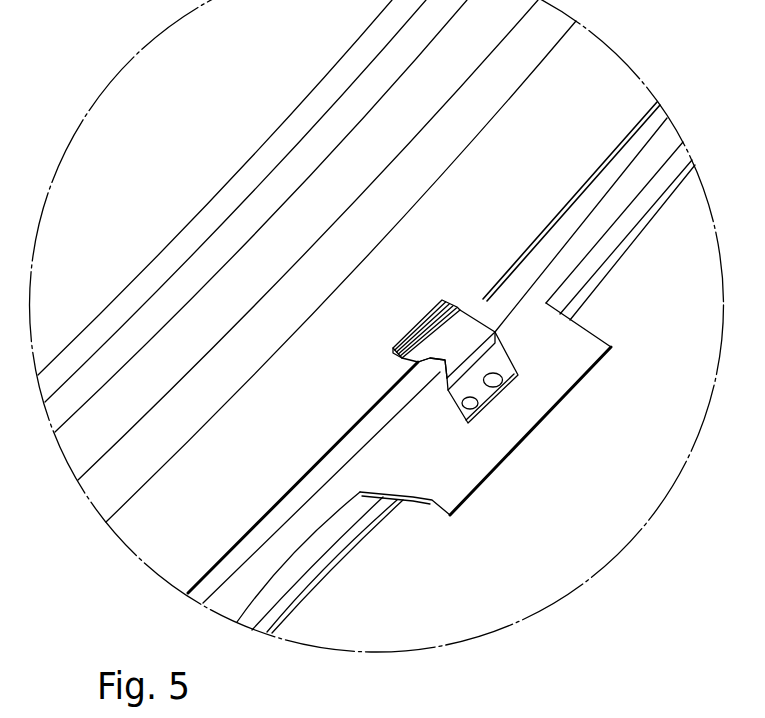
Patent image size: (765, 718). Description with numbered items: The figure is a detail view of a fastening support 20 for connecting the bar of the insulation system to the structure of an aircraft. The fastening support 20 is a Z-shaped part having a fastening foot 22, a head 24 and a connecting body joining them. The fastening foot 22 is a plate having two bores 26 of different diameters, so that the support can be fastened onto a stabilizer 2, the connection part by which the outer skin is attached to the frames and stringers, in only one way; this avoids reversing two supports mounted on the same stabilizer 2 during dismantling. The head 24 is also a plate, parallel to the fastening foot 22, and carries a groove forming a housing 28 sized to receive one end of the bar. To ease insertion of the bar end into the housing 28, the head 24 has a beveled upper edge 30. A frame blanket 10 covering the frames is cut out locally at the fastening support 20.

The stabilizer 2 is at (590, 343).
The frame blanket 10 is at (283, 472).
The fastening support 20 is at (463, 322).
The fastening foot 22 is at (513, 373).
The head 24 is at (397, 362).
The bores 26 is at (473, 407).
The housing 28 is at (442, 305).
The beveled upper edge 30 is at (413, 332).